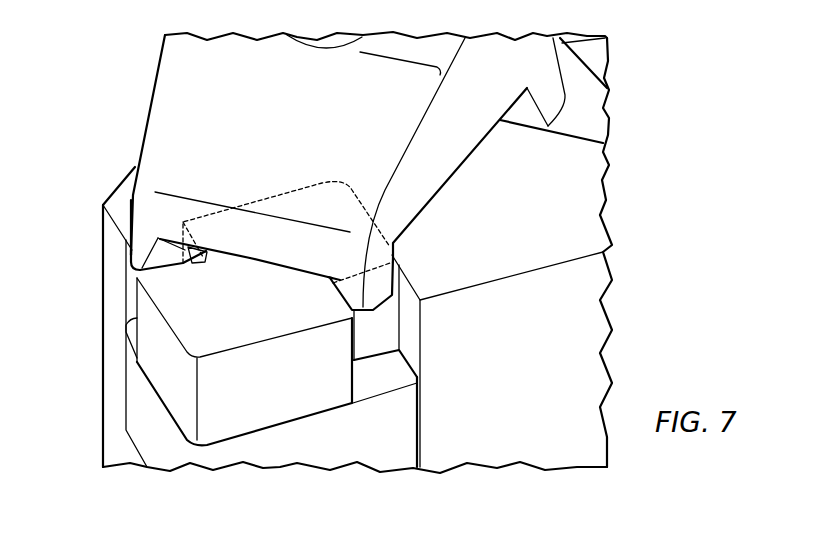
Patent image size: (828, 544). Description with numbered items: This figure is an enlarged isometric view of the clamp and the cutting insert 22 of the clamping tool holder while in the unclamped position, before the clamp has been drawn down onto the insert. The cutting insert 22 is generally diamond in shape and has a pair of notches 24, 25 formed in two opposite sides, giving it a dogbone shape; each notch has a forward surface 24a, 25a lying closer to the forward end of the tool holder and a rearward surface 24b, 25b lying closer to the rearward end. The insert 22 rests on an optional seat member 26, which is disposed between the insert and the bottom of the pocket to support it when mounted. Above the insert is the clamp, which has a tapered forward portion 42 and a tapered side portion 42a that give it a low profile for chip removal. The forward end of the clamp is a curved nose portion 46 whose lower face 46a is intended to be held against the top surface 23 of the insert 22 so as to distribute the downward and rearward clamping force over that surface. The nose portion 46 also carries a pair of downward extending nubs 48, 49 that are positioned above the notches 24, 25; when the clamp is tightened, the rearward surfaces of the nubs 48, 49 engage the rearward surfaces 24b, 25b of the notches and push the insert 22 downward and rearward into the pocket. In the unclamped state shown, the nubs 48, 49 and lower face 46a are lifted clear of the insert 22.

The cutting insert 22 is at (302, 392).
The top surface 23 is at (242, 344).
The notch 24 is at (380, 348).
The forward surface 24a is at (354, 377).
The rearward surface 24b is at (382, 320).
The notch 25 is at (120, 279).
The forward surface 25a is at (163, 272).
The rearward surface 25b is at (190, 259).
The seat member 26 is at (418, 450).
The tapered forward portion 42 is at (190, 80).
The tapered side portion 42a is at (442, 152).
The curved nose portion 46 is at (246, 240).
The lower face 46a is at (307, 276).
The nub 48 is at (383, 287).
The nub 49 is at (120, 251).